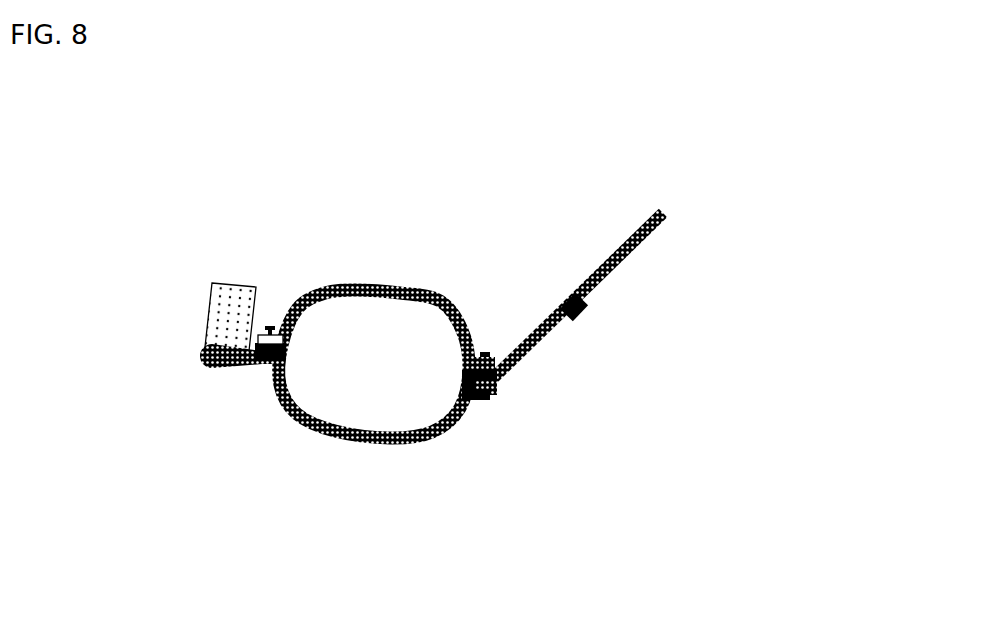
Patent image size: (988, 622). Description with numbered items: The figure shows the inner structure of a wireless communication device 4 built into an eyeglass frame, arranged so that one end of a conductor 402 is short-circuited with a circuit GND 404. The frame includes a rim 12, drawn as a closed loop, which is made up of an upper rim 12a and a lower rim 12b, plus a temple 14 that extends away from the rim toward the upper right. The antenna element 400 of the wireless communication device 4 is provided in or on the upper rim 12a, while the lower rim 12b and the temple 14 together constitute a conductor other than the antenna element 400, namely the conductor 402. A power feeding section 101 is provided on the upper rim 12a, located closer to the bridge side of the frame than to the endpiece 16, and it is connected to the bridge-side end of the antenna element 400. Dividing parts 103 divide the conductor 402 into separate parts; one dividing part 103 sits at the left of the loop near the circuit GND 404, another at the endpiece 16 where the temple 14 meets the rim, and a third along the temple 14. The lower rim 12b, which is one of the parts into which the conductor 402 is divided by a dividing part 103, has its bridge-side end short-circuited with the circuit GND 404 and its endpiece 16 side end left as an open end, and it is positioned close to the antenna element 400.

The wireless communication device 4 is at (577, 137).
The rim 12 is at (334, 415).
The upper rim 12a is at (352, 287).
The lower rim 12b is at (437, 443).
The temple 14 is at (549, 338).
The endpiece 16 is at (484, 356).
The power feeding section 101 is at (261, 337).
The dividing part 103 is at (267, 362).
The antenna element 400 is at (291, 411).
The conductor 402 is at (535, 401).
The circuit GND 404 is at (224, 290).